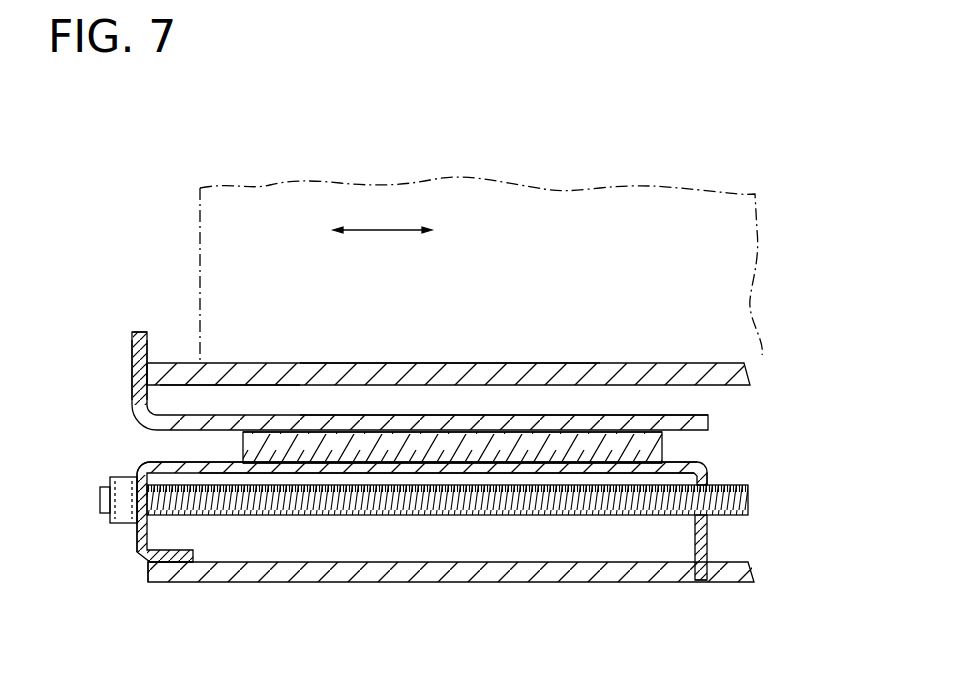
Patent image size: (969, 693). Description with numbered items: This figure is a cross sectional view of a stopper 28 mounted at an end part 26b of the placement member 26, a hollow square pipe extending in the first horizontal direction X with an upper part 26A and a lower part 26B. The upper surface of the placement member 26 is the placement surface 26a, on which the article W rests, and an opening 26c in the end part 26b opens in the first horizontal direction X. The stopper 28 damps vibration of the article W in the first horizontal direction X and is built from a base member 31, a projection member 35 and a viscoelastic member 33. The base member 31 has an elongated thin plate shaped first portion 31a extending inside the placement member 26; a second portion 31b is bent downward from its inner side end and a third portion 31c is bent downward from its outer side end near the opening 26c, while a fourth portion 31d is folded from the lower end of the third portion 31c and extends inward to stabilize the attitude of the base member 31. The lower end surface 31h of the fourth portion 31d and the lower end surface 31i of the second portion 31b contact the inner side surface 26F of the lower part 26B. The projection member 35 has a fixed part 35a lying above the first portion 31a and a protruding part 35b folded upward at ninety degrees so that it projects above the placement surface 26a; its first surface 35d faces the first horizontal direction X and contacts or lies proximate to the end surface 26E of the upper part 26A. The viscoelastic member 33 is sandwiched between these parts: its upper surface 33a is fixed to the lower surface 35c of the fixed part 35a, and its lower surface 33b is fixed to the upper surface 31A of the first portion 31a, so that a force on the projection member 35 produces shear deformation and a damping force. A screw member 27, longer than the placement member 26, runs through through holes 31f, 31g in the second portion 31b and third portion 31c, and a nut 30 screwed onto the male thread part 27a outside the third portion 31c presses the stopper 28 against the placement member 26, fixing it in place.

The article W is at (533, 190).
The first horizontal direction X is at (382, 215).
The placement member 26 is at (610, 331).
The upper part 26A is at (370, 363).
The lower part 26B is at (370, 582).
The placement surface 26a is at (407, 360).
The end part 26b is at (175, 372).
The opening 26c is at (118, 409).
The end surface 26E is at (152, 345).
The inner side surface 26F is at (190, 555).
The screw member 27 is at (469, 528).
The male thread part 27a is at (100, 515).
The stopper 28 is at (289, 394).
The nut 30 is at (123, 525).
The base member 31 is at (403, 486).
The upper surface 31A is at (647, 450).
The first portion 31a is at (527, 470).
The second portion 31b is at (710, 532).
The third portion 31c is at (133, 477).
The fourth portion 31d is at (170, 560).
The through hole 31f is at (700, 507).
The through hole 31g is at (150, 466).
The lower end surface 31h is at (187, 560).
The lower end surface 31i is at (700, 582).
The viscoelastic member 33 is at (438, 440).
The upper surface 33a is at (440, 432).
The lower surface 33b is at (313, 475).
The projection member 35 is at (508, 405).
The fixed part 35a is at (676, 363).
The protruding part 35b is at (145, 362).
The lower surface 35c is at (613, 417).
The first surface 35d is at (148, 352).